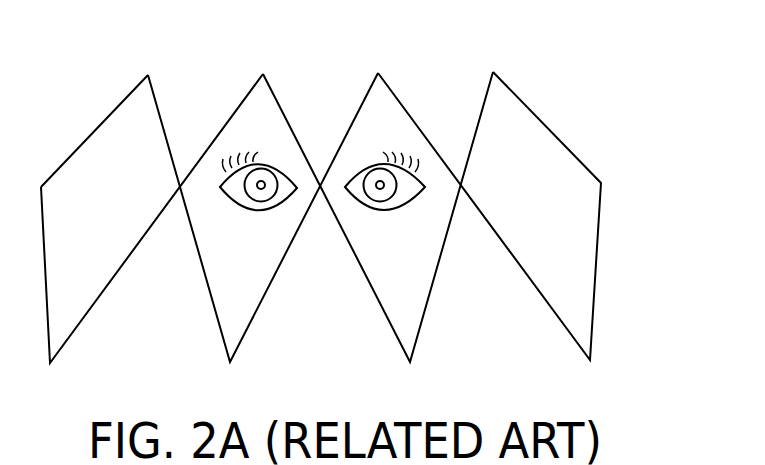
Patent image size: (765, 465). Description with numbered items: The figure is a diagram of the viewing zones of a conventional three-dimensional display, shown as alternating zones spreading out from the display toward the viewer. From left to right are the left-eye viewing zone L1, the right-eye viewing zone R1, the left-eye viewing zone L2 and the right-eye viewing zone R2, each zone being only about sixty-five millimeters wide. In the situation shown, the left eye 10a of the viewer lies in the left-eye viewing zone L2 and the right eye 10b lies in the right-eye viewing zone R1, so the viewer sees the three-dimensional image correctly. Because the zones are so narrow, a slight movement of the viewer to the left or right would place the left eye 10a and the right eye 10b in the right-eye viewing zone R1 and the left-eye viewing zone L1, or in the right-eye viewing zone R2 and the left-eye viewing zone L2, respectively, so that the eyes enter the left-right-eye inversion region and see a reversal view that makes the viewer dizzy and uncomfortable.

The left eye 10a is at (377, 160).
The right eye 10b is at (268, 165).
The left-eye viewing zone L1 is at (75, 315).
The right-eye viewing zone R1 is at (243, 313).
The left-eye viewing zone L2 is at (407, 308).
The right-eye viewing zone R2 is at (585, 305).